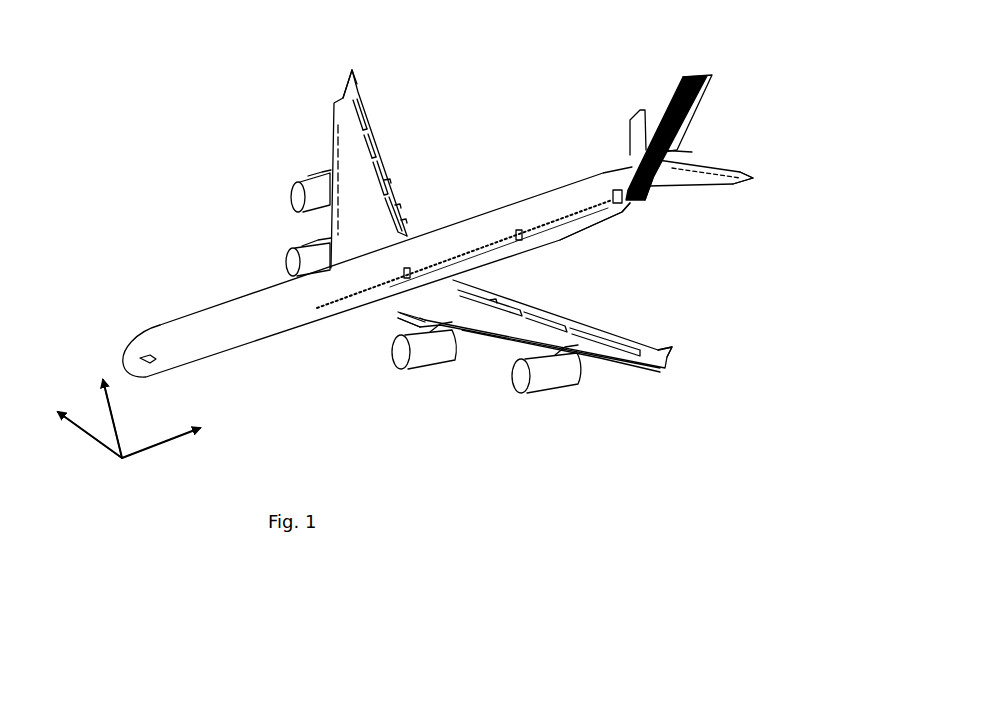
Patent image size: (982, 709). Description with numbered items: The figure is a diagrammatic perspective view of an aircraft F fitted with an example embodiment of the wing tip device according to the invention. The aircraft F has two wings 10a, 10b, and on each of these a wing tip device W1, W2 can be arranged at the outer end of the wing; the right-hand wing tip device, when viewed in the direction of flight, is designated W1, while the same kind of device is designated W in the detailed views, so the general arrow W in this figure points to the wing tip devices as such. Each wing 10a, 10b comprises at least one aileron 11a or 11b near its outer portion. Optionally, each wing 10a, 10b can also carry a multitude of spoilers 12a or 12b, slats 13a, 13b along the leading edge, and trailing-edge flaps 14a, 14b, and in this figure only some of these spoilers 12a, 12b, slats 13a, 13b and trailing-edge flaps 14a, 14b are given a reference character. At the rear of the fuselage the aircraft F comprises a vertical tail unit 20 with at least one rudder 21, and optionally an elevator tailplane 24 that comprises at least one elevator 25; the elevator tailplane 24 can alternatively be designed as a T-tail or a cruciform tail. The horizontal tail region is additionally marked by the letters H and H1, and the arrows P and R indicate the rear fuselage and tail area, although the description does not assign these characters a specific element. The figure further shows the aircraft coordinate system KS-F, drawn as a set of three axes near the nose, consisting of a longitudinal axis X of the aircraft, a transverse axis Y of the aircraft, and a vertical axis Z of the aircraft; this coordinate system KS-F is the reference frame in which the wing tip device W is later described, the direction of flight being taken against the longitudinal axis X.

The aircraft F is at (222, 246).
The wing tip device W is at (357, 57).
The wing tip device W1 is at (350, 76).
The wing tip device W2 is at (690, 352).
The wing 10a is at (333, 110).
The wing 10b is at (622, 358).
The aileron 11a is at (366, 110).
The aileron 11b is at (610, 337).
The spoiler 12a is at (400, 198).
The spoiler 12b is at (480, 293).
The slat 13a is at (336, 135).
The slat 13b is at (515, 342).
The trailing-edge flap 14a is at (384, 163).
The trailing-edge flap 14b is at (565, 332).
The vertical tail unit 20 is at (680, 87).
The rudder 21 is at (700, 100).
The horizontal tail unit H is at (703, 137).
The horizontal tail tip H1 is at (688, 155).
The elevator tailplane 24 is at (697, 185).
The elevator 25 is at (723, 172).
The pitch axis region / tail section P is at (650, 198).
The rear fuselage section R is at (628, 244).
The aircraft coordinate system KS-F is at (140, 473).
The longitudinal axis X is at (161, 445).
The transverse axis Y is at (90, 435).
The vertical axis Z is at (102, 414).